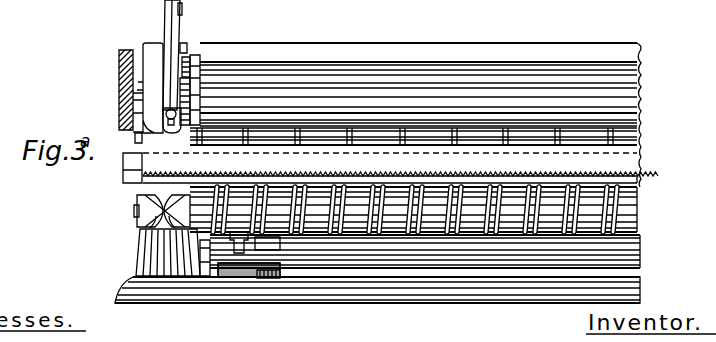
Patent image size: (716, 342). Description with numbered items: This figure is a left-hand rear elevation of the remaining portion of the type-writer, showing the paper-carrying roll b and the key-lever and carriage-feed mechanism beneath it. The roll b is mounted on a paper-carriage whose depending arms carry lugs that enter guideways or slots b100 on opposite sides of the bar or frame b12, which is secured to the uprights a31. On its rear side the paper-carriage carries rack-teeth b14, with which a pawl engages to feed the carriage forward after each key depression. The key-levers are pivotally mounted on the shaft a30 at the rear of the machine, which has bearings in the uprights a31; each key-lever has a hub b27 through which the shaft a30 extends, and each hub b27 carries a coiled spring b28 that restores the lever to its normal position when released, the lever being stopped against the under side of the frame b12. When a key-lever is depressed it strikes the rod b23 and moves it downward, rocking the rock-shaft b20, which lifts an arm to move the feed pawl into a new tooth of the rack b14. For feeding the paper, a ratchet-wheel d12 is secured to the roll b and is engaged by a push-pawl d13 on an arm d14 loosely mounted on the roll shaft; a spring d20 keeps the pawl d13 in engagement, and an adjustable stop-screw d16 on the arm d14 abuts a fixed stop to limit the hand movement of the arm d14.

The paper-carrying roll b is at (309, 70).
The guideways or slots b100 is at (130, 172).
The bar or frame b12 is at (123, 160).
The arm d14 is at (170, 16).
The adjustable screw or stop d16 is at (163, 113).
The spring d20 is at (181, 45).
The push-pawl d13 is at (184, 92).
The ratchet-wheel d12 is at (196, 90).
The shaft a30 is at (135, 213).
The coiled spring b28 is at (409, 230).
The hub b27 is at (471, 230).
The rack-teeth b14 is at (152, 183).
The uprights a31 is at (140, 253).
The rod b23 is at (362, 245).
The rock-shaft b20 is at (313, 263).